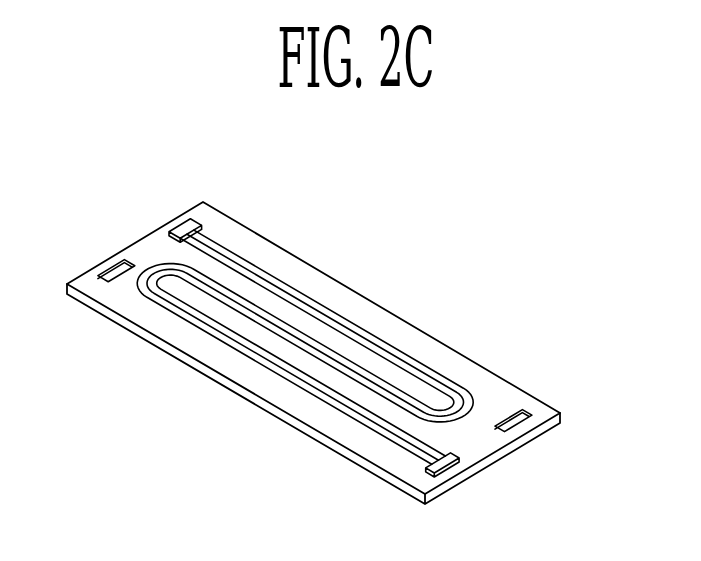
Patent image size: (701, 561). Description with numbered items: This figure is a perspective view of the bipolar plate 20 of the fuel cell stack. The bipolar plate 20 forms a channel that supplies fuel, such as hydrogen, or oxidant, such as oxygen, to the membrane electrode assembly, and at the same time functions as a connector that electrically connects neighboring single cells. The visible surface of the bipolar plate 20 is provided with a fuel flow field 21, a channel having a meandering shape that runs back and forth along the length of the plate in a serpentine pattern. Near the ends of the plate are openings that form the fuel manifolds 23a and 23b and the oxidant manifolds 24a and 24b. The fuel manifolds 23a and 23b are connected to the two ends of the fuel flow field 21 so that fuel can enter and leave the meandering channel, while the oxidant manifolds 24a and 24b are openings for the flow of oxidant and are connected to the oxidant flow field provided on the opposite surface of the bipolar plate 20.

The bipolar plate 20 is at (510, 393).
The fuel flow field 21 is at (421, 358).
The fuel manifold 23a is at (184, 227).
The fuel manifold 23b is at (447, 466).
The oxidant manifold 24a is at (112, 270).
The oxidant manifold 24b is at (515, 422).